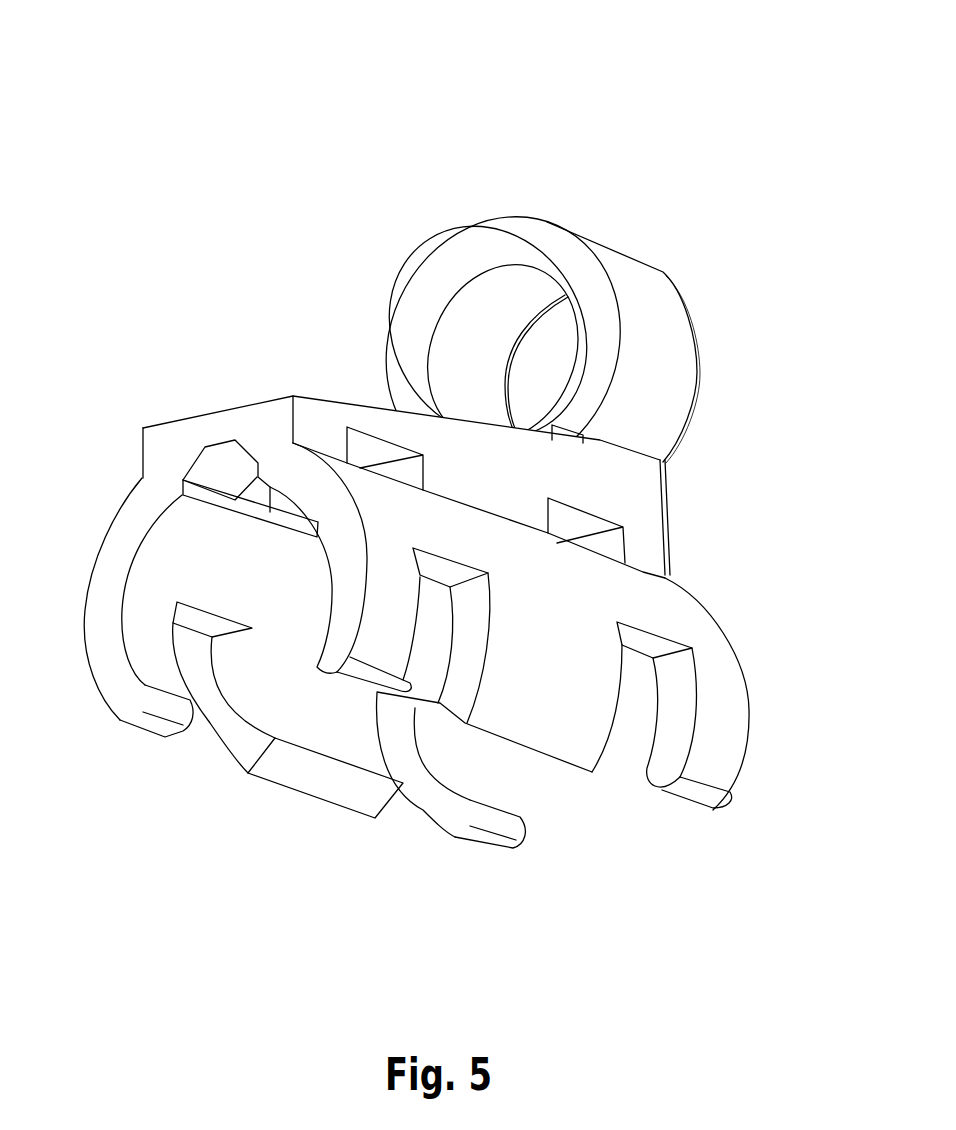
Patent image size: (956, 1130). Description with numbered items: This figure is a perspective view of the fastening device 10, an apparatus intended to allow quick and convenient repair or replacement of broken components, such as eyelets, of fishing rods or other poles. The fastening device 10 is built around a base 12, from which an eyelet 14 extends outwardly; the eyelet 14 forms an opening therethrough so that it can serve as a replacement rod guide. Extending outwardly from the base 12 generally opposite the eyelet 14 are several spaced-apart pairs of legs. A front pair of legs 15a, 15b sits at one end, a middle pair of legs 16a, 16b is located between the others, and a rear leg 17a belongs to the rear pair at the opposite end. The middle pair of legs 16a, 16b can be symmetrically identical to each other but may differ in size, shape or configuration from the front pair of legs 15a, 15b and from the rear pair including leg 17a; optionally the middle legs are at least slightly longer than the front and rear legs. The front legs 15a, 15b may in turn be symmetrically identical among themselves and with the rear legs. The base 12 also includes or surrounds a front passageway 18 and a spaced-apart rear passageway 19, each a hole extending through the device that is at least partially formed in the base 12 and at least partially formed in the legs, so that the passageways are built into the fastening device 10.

The fastening device 10 is at (582, 98).
The base 12 is at (645, 494).
The eyelet 14 is at (668, 352).
The front leg 15a is at (490, 842).
The front leg 15b is at (733, 727).
The middle leg 16a is at (317, 780).
The middle leg 16b is at (588, 738).
The rear leg 17a is at (142, 722).
The front passageway 18 is at (610, 545).
The rear passageway 19 is at (373, 443).